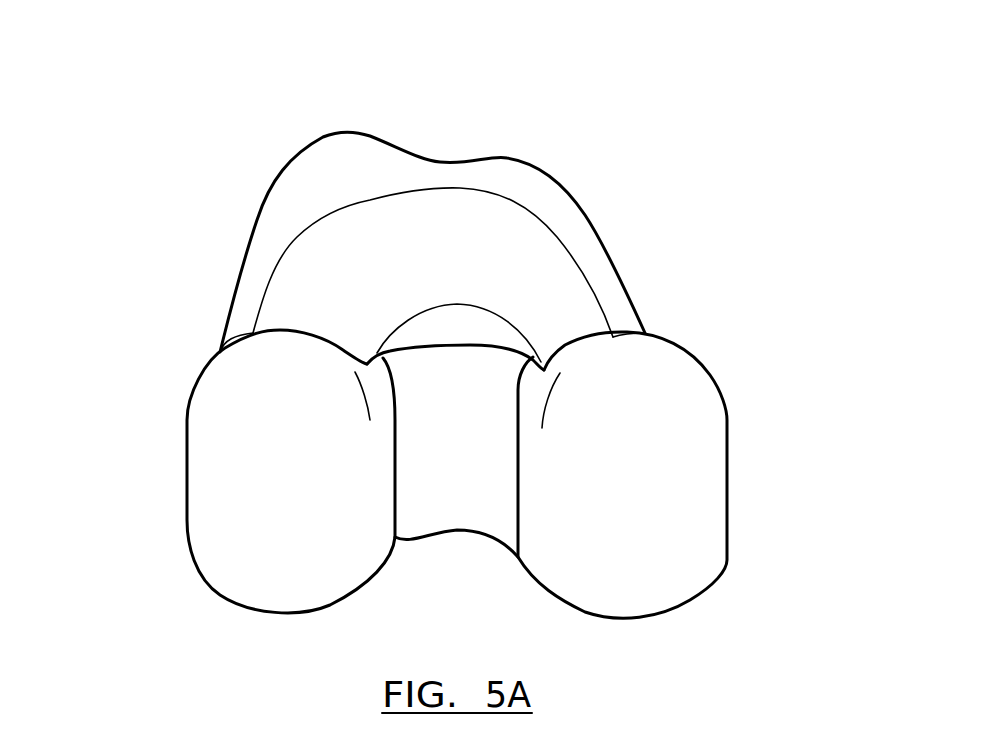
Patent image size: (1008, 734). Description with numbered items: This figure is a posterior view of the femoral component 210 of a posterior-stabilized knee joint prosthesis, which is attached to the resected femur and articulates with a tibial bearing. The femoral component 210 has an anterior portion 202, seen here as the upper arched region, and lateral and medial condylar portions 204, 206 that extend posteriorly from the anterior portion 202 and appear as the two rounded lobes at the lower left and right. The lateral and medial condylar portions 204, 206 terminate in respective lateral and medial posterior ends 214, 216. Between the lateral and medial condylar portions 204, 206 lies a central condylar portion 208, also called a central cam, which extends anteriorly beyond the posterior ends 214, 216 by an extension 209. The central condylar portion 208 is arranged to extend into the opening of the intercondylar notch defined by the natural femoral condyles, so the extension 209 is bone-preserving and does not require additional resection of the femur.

The anterior portion 202 is at (517, 247).
The lateral condylar portion 204 is at (220, 473).
The medial condylar portion 206 is at (683, 472).
The central condylar portion 208 is at (455, 468).
The extension 209 is at (453, 347).
The femoral component 210 is at (634, 120).
The lateral posterior end 214 is at (250, 333).
The medial posterior end 216 is at (657, 333).